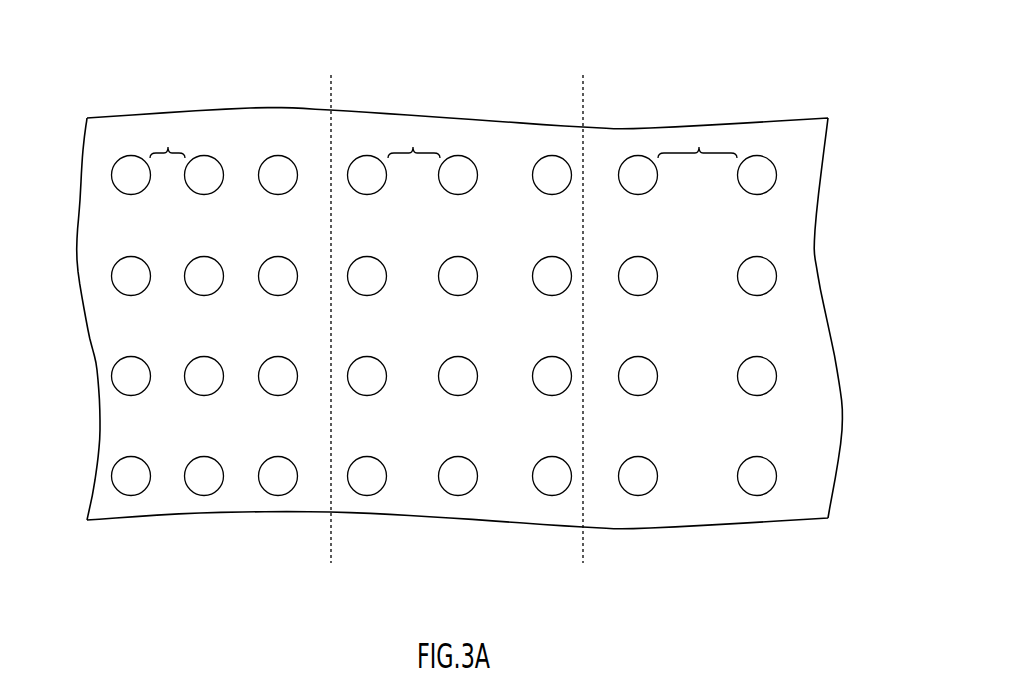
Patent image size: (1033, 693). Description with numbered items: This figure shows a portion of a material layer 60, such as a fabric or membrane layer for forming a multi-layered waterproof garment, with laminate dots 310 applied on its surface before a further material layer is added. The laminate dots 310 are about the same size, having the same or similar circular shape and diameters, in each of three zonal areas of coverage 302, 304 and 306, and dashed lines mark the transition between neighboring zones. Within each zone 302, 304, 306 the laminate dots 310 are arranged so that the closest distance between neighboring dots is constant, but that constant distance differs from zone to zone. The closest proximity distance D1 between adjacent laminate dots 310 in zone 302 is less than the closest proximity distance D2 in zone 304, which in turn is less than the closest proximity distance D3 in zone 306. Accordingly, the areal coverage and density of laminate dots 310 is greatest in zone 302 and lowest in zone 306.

The material layer 60 is at (844, 97).
The zonal area of coverage 302 is at (235, 101).
The zonal area of coverage 304 is at (470, 108).
The zonal area of coverage 306 is at (655, 100).
The laminate dots 310 is at (130, 175).
The closest proximity distance D1 is at (168, 147).
The closest proximity distance D2 is at (413, 147).
The closest proximity distance D3 is at (698, 147).